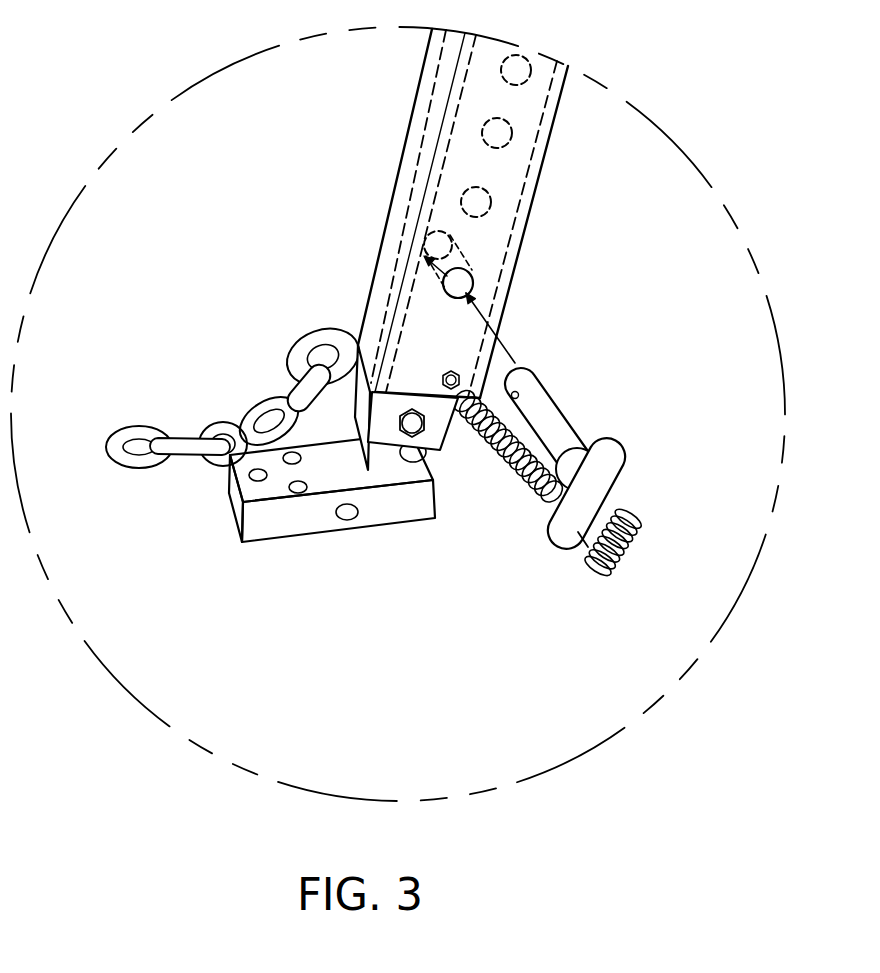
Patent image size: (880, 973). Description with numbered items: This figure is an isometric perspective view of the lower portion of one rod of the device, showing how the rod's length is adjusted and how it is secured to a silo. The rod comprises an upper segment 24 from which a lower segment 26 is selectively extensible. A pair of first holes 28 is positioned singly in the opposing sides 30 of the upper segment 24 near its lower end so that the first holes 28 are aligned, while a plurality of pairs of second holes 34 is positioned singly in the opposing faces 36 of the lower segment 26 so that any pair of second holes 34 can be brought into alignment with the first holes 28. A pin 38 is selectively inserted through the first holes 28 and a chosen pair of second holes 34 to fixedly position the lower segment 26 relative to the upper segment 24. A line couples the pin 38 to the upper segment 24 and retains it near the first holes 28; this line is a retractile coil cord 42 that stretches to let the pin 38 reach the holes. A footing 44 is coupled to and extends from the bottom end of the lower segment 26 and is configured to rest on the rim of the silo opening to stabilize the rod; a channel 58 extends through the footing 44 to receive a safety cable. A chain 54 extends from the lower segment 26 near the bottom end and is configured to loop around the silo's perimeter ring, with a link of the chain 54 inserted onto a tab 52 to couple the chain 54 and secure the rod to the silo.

The upper segment 24 is at (557, 104).
The opposing sides 30 is at (535, 159).
The second holes 34 is at (505, 65).
The first holes 28 is at (477, 278).
The opposing faces 36 is at (385, 432).
The footing 44 is at (417, 513).
The channel 58 is at (347, 515).
The lower segment 26 is at (448, 436).
The pin 38 is at (617, 473).
The retractile coil cord 42 is at (637, 524).
The tab 52 is at (143, 462).
The chain 54 is at (285, 383).